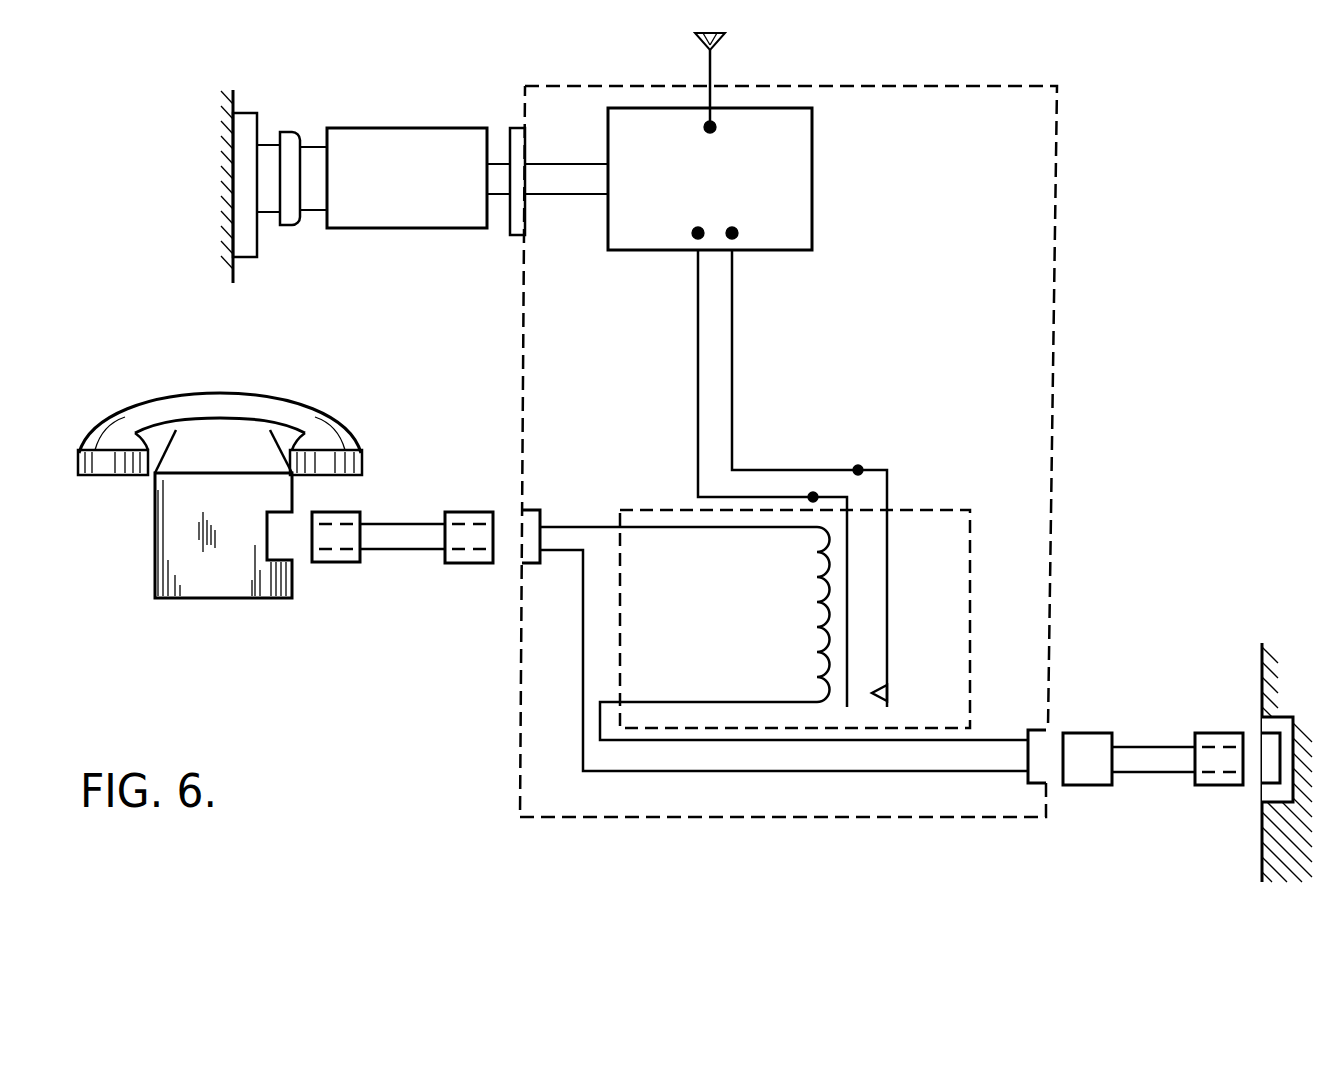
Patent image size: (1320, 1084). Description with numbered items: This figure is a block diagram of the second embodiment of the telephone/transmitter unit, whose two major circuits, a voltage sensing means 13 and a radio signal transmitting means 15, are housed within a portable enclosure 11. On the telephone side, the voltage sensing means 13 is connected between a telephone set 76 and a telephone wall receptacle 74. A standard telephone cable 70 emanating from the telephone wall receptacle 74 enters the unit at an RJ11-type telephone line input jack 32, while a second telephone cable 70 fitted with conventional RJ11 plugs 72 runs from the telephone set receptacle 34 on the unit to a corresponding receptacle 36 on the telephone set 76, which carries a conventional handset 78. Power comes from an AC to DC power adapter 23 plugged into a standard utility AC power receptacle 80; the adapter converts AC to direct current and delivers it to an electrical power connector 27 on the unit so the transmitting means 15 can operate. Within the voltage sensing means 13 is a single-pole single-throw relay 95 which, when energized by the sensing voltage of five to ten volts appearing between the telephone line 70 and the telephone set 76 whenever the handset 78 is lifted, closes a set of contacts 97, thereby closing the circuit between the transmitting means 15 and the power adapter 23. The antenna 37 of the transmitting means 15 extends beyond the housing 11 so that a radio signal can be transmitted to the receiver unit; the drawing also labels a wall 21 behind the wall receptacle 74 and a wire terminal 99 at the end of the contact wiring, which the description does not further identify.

The portable enclosure 11 is at (520, 738).
The voltage sensing means 13 is at (938, 535).
The radio signal transmitting means 15 is at (812, 108).
The wall 21 is at (1260, 703).
The AC to DC power adapter 23 is at (487, 128).
The electrical power connector 27 is at (510, 224).
The telephone line input jack 32 is at (1035, 747).
The telephone set receptacle 34 is at (530, 550).
The receptacle 36 is at (282, 545).
The antenna 37 is at (722, 42).
The telephone cable 70 is at (418, 540).
The plug 72 is at (358, 512).
The telephone wall receptacle 74 is at (1265, 770).
The telephone set 76 is at (153, 596).
The telephone handset 78 is at (298, 400).
The AC power receptacle 80 is at (248, 258).
The single-pole single-throw relay 95 is at (815, 548).
The set of contacts 97 is at (868, 535).
The wire terminal 99 is at (884, 692).